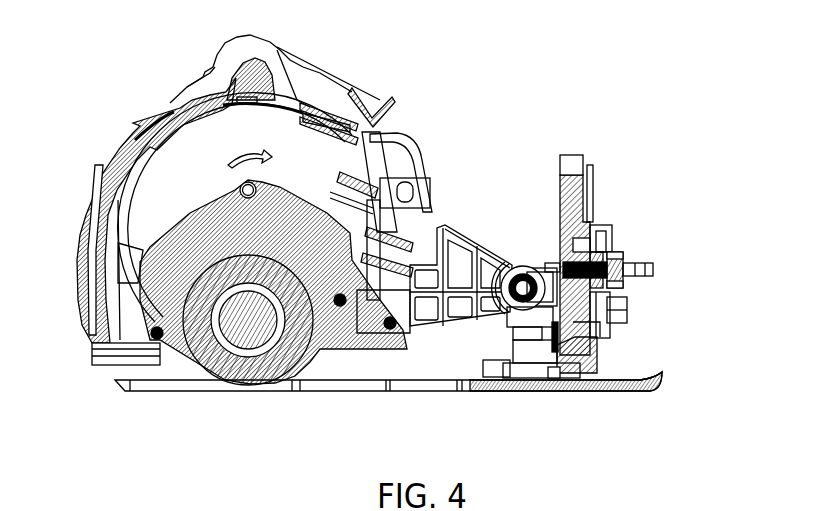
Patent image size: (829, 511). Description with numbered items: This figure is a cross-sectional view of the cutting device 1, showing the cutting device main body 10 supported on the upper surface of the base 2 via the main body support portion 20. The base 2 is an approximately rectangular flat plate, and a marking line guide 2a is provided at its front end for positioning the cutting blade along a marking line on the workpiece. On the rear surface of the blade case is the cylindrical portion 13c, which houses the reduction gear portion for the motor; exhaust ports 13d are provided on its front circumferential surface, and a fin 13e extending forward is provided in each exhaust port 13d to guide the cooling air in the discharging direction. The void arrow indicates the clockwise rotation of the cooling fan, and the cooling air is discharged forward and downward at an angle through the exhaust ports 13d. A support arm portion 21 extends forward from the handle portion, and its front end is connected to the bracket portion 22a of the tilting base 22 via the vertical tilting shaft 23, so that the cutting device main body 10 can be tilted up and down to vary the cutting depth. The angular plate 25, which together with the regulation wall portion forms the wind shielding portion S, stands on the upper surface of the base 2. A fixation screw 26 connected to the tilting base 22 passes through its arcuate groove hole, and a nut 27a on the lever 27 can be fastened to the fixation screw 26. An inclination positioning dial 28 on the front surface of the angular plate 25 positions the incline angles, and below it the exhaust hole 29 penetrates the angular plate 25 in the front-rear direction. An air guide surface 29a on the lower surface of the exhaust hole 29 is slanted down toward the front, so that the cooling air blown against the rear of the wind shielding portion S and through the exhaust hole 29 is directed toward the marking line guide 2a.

The cutting device 1 is at (438, 93).
The base 2 is at (622, 393).
The marking line guide 2a is at (660, 380).
The cutting device main body 10 is at (141, 123).
The cylindrical portion 13c is at (308, 95).
The exhaust ports 13d is at (365, 108).
The fin 13e is at (390, 207).
The main body support portion 20 is at (610, 199).
The support arm portion 21 is at (478, 290).
The tilting base 22 is at (537, 310).
The bracket portion 22a is at (542, 293).
The vertical tilting shaft 23 is at (515, 265).
The angular plate 25 is at (572, 155).
The fixation screw 26 is at (622, 310).
The lever 27 is at (648, 262).
The nut 27a is at (645, 290).
The inclination positioning dial 28 is at (612, 240).
The exhaust hole 29 is at (573, 310).
The air guide surface 29a is at (573, 340).
The wind shielding portion S is at (563, 214).